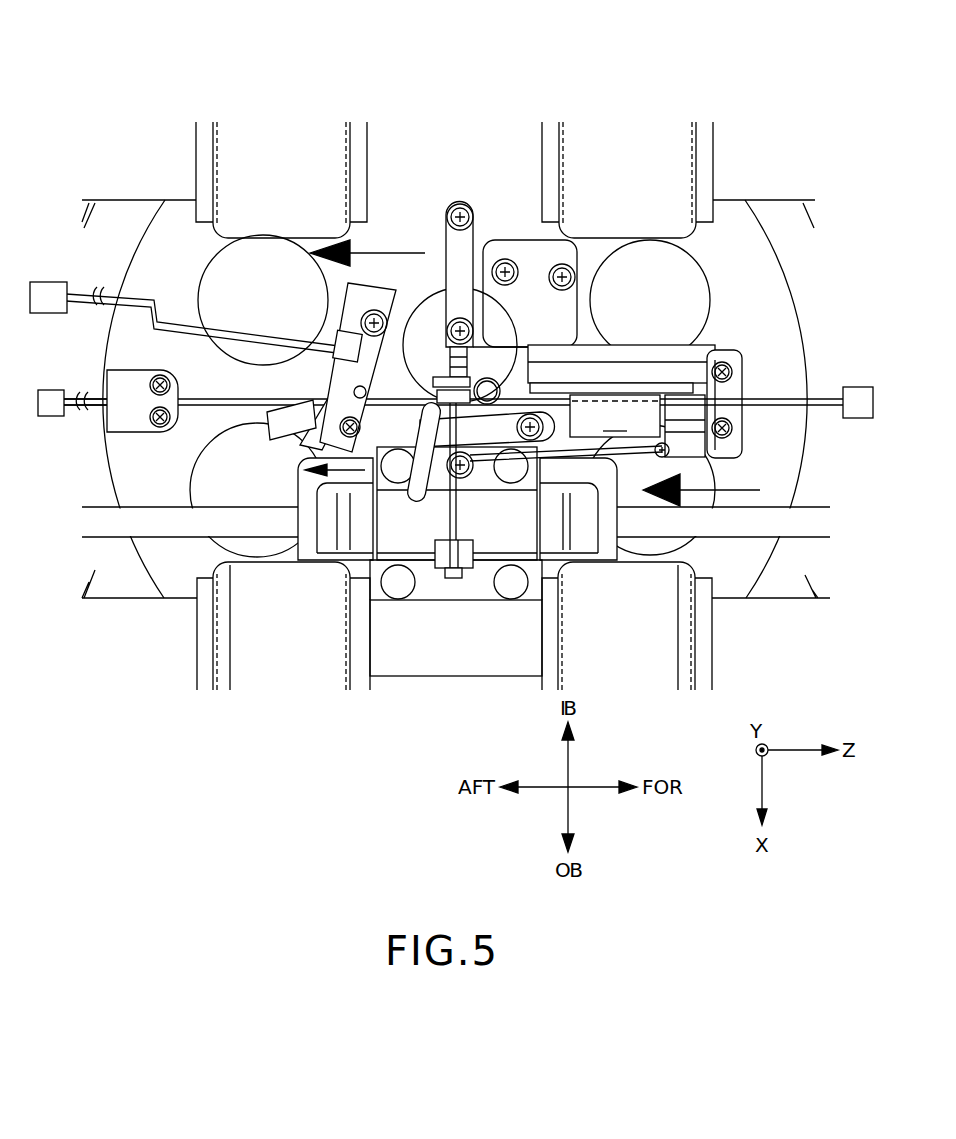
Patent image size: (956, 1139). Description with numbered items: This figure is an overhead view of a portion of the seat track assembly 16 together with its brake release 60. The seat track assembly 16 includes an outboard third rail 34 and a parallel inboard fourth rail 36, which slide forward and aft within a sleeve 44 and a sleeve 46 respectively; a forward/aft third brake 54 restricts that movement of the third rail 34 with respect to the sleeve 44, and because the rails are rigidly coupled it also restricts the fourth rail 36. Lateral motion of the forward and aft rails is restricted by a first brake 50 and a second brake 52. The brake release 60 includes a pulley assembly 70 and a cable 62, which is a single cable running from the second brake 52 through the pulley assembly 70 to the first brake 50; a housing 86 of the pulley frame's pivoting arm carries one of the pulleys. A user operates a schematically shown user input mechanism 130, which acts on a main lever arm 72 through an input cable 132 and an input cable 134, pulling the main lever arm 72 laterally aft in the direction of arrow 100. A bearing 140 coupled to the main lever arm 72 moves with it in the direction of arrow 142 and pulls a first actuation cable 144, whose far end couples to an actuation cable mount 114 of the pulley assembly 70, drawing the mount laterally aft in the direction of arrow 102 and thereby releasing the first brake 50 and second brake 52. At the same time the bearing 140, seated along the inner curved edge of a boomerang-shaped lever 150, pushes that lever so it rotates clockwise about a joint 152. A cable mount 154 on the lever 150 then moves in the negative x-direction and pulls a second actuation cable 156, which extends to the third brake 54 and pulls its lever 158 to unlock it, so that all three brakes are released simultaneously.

The seat track assembly 16 is at (178, 69).
The third rail 34 is at (770, 617).
The fourth rail 36 is at (727, 188).
The sleeve 44 is at (663, 578).
The sleeve 46 is at (664, 229).
The first brake 50 is at (858, 402).
The second brake 52 is at (440, 403).
The third brake 54 is at (509, 548).
The brake release 60 is at (801, 311).
The cable 62 is at (192, 410).
The pulley assembly 70 is at (684, 383).
The main lever arm 72 is at (466, 248).
The housing 86 is at (615, 416).
The arrow 100 is at (388, 252).
The arrow 102 is at (743, 490).
The actuation cable mount 114 is at (713, 358).
The user input mechanism 130 is at (196, 322).
The input cable 132 is at (418, 355).
The input cable 134 is at (325, 362).
The bearing 140 is at (478, 474).
The arrow 142 is at (337, 467).
The first actuation cable 144 is at (590, 470).
The lever 150 is at (415, 500).
The joint 152 is at (600, 381).
The cable mount 154 is at (470, 352).
The second actuation cable 156 is at (433, 558).
The lever 158 is at (447, 572).